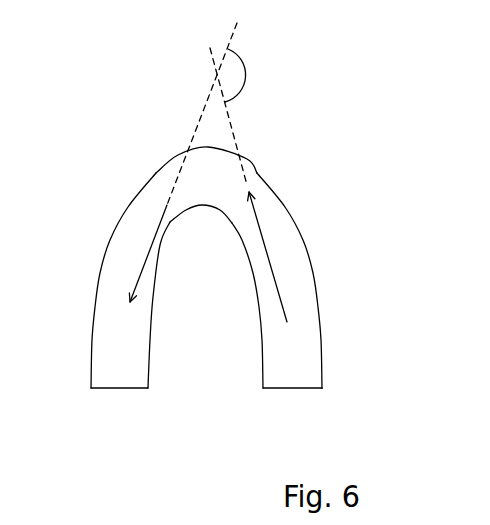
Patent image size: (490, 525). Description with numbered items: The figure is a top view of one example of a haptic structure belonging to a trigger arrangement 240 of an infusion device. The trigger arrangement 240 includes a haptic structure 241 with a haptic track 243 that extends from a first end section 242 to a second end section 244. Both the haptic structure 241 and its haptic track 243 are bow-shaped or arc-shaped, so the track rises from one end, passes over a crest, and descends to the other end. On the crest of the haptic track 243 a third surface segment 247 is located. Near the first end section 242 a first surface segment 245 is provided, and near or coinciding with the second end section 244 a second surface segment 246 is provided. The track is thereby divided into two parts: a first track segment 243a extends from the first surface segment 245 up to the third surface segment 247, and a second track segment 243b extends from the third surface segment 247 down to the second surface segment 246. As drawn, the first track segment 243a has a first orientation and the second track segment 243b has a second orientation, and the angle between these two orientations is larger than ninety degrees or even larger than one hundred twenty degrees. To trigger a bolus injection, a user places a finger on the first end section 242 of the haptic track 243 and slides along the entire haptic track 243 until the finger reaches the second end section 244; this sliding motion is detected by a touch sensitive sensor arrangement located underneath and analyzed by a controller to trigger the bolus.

The trigger arrangement 240 is at (162, 110).
The haptic structure 241 is at (300, 167).
The first end section 242 is at (335, 377).
The haptic track 243 is at (288, 340).
The first track segment 243a is at (308, 245).
The second track segment 243b is at (112, 227).
The second end section 244 is at (152, 375).
The first surface segment 245 is at (277, 380).
The second surface segment 246 is at (122, 380).
The third surface segment 247 is at (202, 185).